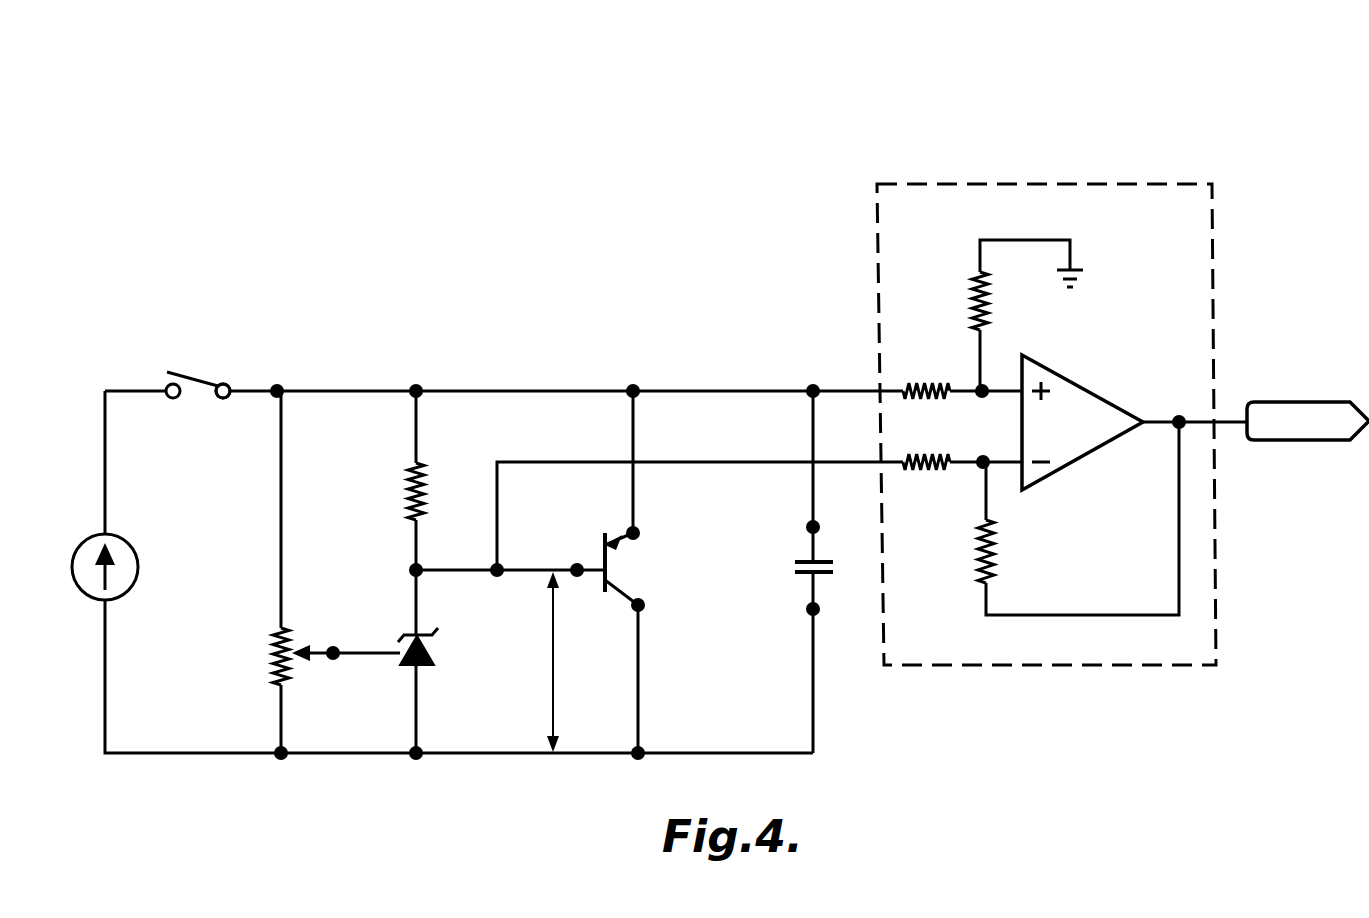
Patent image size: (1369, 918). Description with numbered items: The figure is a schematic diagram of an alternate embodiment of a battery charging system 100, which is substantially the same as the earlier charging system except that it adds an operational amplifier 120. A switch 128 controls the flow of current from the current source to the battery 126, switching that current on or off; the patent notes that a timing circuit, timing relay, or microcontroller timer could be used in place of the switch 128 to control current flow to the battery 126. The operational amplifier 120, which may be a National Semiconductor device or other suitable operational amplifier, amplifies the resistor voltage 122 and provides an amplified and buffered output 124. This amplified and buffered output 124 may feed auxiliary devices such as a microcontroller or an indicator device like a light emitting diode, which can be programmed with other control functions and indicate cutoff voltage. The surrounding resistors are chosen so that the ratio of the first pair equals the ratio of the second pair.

The battery charging system 100 is at (630, 322).
The operational amplifier 120 is at (877, 258).
The voltage V_R11 122 is at (548, 665).
The amplified and buffered output 124 is at (1272, 402).
The battery B11 126 is at (802, 560).
The switch S11 128 is at (222, 389).